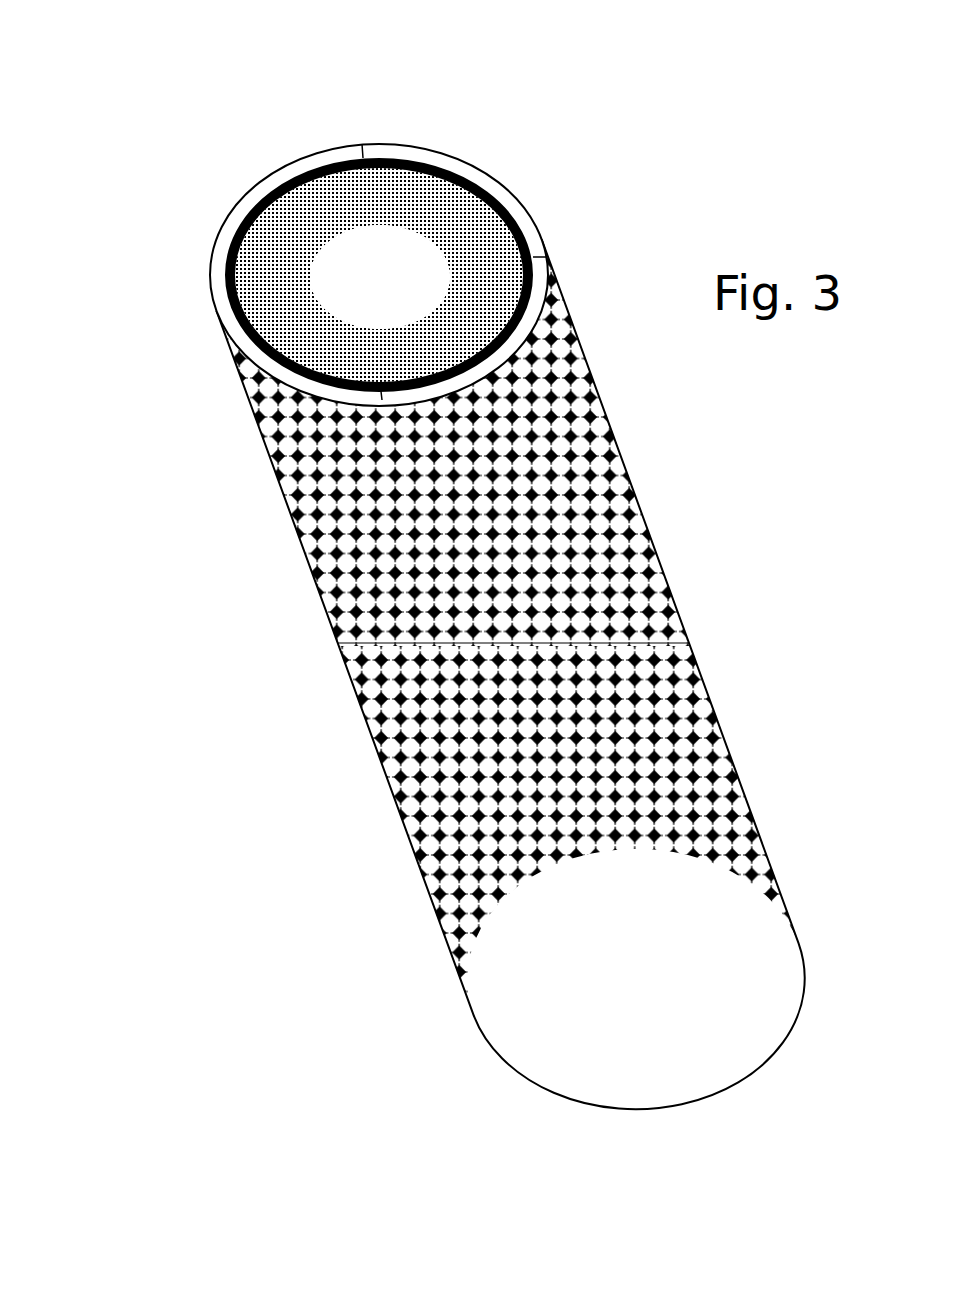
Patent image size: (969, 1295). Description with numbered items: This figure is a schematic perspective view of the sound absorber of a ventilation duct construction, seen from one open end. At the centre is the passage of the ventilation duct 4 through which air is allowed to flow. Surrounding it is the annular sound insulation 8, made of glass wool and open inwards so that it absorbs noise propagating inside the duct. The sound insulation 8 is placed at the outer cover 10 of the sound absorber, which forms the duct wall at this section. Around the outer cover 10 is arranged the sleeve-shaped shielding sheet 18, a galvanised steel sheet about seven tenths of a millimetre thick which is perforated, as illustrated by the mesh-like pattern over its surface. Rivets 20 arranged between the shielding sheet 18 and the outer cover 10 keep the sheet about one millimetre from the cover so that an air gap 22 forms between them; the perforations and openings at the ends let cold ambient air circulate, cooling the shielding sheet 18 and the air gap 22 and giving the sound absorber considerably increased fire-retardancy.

The ventilation duct 4 is at (358, 280).
The sound insulation 8 is at (275, 243).
The outer cover 10 is at (442, 166).
The shielding sheet 18 is at (322, 605).
The rivets 20 is at (222, 266).
The air gap 22 is at (522, 220).